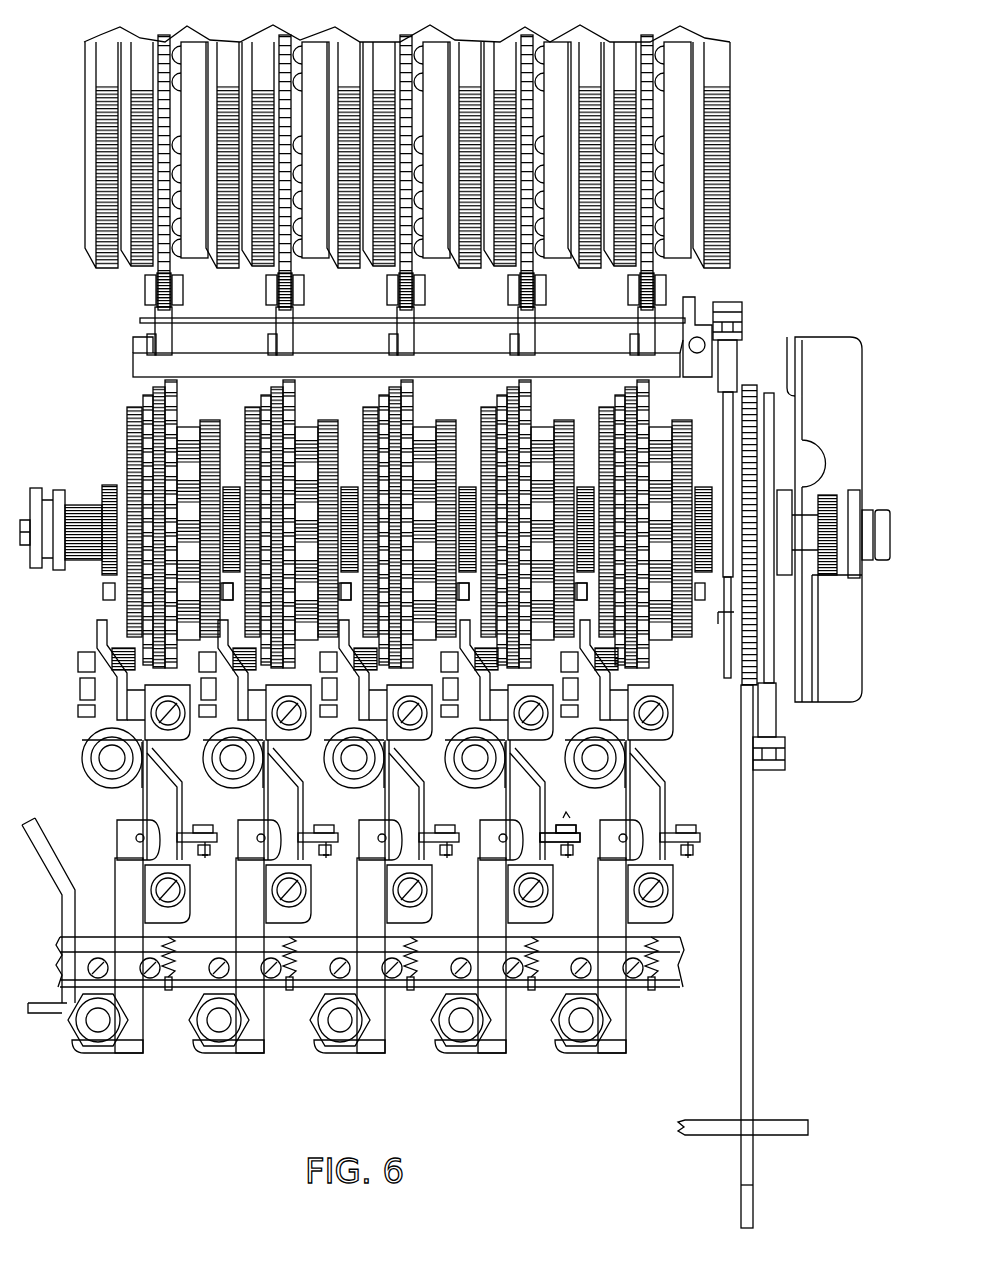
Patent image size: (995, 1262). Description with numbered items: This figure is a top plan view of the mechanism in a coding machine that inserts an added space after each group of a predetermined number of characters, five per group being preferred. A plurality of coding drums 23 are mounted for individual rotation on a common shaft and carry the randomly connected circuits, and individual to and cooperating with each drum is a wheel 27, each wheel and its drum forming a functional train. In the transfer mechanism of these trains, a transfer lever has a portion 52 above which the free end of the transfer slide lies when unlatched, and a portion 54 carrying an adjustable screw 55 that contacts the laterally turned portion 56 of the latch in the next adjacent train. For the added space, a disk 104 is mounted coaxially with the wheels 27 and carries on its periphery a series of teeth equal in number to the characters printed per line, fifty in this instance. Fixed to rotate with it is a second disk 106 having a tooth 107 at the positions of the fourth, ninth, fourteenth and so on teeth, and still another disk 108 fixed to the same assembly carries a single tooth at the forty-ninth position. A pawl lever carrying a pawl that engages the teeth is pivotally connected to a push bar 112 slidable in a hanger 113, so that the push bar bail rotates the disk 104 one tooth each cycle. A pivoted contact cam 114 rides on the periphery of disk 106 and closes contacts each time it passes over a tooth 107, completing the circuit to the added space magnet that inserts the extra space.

The coding drum 23 is at (287, 247).
The wheel 27 is at (292, 413).
The portion of transfer lever 52 is at (637, 773).
The portion of transfer lever 54 is at (548, 842).
The adjustable screw 55 is at (555, 830).
The laterally turned portion 56 is at (561, 822).
The disk 104 is at (745, 387).
The second disk 106 is at (723, 640).
The tooth 107 is at (725, 617).
The disk 108 is at (770, 627).
The push bar 112 is at (753, 914).
The hanger 113 is at (772, 1122).
The contact cam 114 is at (732, 362).